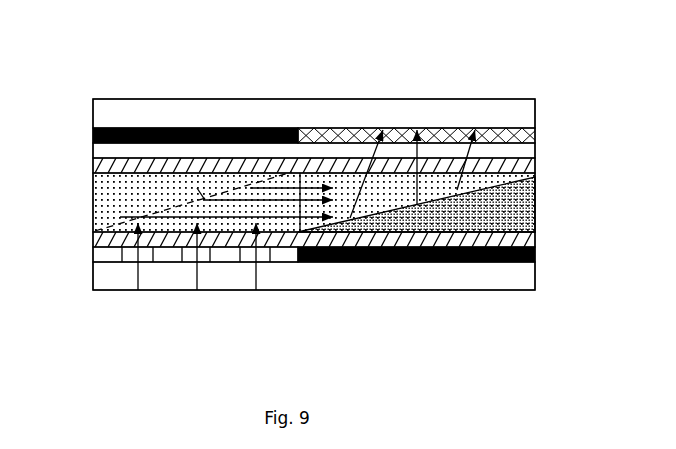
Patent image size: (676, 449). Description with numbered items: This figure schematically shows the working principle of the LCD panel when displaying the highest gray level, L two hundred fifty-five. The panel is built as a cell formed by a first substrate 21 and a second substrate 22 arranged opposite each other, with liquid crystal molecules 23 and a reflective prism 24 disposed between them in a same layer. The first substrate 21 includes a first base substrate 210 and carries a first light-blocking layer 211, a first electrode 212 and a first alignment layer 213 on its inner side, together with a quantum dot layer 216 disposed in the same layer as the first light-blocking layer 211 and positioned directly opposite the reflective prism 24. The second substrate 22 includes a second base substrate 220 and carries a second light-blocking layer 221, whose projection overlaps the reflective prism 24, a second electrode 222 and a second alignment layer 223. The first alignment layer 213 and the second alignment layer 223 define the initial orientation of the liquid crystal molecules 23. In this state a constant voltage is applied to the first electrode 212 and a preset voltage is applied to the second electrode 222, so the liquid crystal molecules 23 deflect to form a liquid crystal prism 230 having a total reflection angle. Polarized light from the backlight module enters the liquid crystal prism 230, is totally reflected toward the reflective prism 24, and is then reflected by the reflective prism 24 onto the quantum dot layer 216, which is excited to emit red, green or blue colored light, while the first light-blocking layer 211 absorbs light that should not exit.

The first substrate 21 is at (183, 40).
The first base substrate 210 is at (407, 115).
The first light-blocking layer 211 is at (287, 130).
The first electrode 212 is at (218, 152).
The first alignment layer 213 is at (158, 167).
The quantum dot layer 216 is at (342, 137).
The second substrate 22 is at (417, 347).
The second base substrate 220 is at (400, 270).
The second light-blocking layer 221 is at (340, 250).
The second electrode 222 is at (283, 255).
The second alignment layer 223 is at (220, 235).
The liquid crystal molecules 23 is at (120, 217).
The liquid crystal prism 230 is at (197, 188).
The reflective prism 24 is at (512, 202).